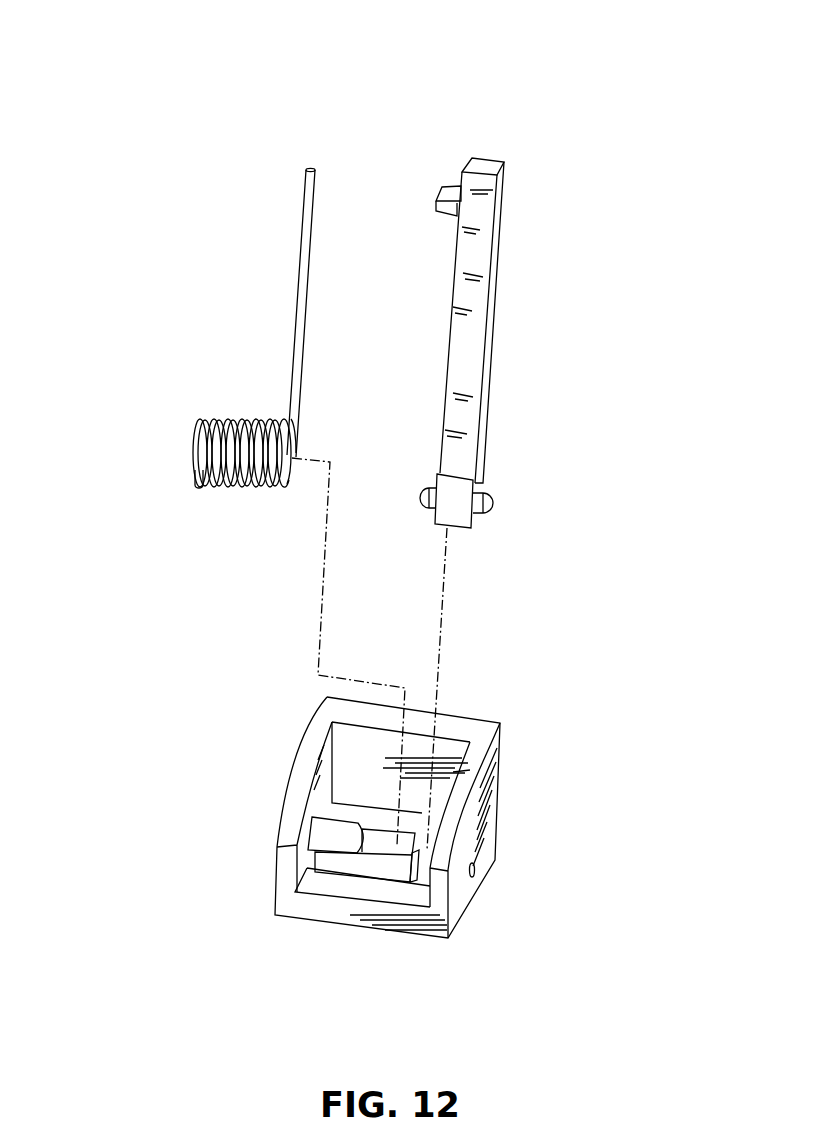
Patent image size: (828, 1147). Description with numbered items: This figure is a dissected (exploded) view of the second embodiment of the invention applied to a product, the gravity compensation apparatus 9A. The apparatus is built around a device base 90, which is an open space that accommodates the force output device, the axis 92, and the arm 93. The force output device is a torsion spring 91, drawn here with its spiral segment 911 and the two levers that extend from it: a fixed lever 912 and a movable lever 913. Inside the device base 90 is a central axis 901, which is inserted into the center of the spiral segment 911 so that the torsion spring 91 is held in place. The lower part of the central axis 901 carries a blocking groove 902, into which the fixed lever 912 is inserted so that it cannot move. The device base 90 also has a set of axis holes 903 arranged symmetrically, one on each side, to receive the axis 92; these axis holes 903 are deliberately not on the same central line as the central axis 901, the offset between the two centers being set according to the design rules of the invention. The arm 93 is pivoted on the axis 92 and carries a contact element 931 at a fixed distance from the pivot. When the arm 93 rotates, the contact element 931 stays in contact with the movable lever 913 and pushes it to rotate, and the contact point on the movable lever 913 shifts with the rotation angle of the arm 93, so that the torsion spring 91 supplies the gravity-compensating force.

The gravity compensation apparatus 9A is at (598, 617).
The device base 90 is at (485, 802).
The central axis 901 is at (318, 835).
The blocking groove 902 is at (337, 870).
The axis holes 903 is at (475, 870).
The torsion spring 91 is at (122, 340).
The spiral segment 911 is at (195, 445).
The fixed lever 912 is at (195, 483).
The movable lever 913 is at (297, 352).
The axis 92 is at (425, 492).
The arm 93 is at (477, 300).
The contact element 931 is at (443, 187).